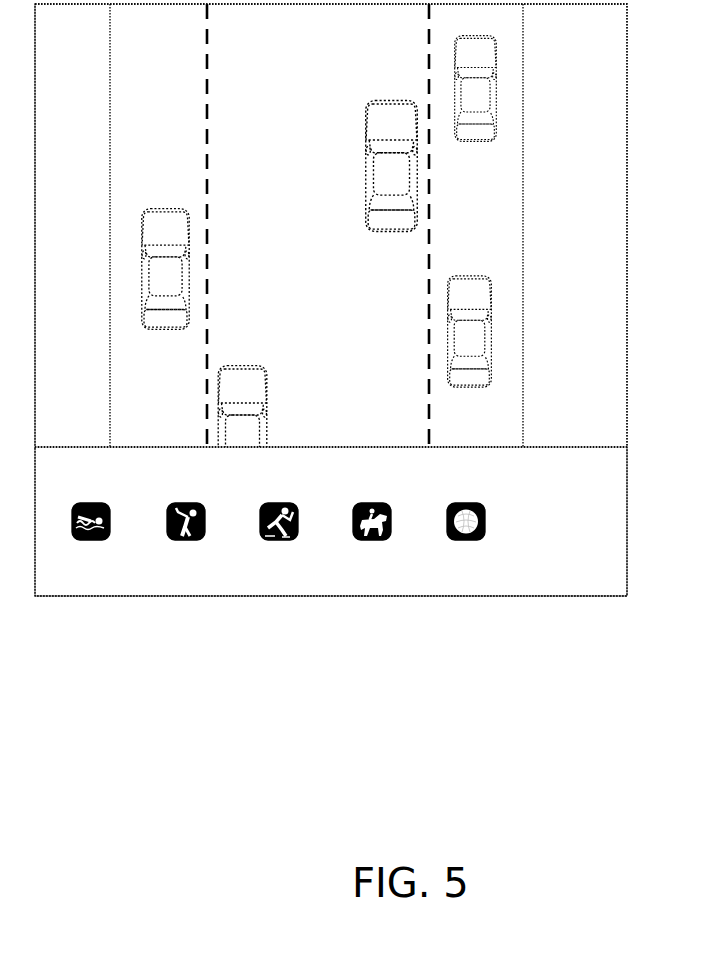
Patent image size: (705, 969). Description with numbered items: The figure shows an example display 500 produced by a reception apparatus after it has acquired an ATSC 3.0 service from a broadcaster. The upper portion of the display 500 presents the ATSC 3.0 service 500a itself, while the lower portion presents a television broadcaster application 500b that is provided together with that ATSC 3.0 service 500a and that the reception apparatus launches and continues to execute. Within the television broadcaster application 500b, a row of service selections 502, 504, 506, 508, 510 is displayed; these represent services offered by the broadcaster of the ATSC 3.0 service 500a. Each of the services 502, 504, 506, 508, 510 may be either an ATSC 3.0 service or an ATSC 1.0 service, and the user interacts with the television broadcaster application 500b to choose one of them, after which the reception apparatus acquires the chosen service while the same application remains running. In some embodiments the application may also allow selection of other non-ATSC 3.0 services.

The display 500 is at (633, 92).
The ATSC 3.0 service 500a is at (608, 48).
The television broadcaster application 500b is at (597, 495).
The service selection 502 is at (91, 544).
The service selection 504 is at (186, 544).
The service selection 506 is at (280, 544).
The service selection 508 is at (372, 544).
The service selection 510 is at (466, 544).